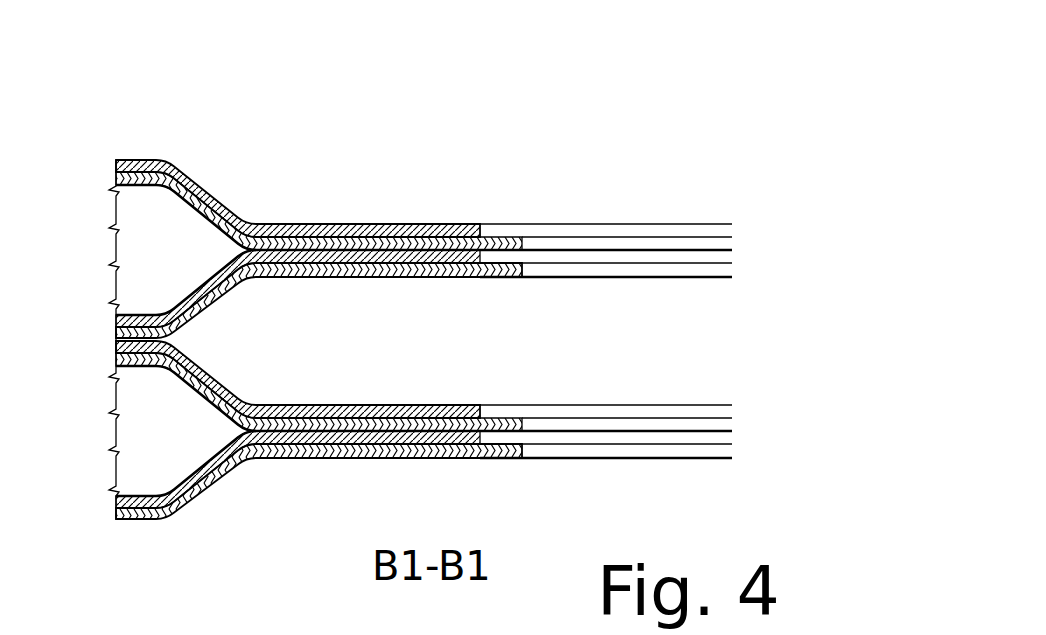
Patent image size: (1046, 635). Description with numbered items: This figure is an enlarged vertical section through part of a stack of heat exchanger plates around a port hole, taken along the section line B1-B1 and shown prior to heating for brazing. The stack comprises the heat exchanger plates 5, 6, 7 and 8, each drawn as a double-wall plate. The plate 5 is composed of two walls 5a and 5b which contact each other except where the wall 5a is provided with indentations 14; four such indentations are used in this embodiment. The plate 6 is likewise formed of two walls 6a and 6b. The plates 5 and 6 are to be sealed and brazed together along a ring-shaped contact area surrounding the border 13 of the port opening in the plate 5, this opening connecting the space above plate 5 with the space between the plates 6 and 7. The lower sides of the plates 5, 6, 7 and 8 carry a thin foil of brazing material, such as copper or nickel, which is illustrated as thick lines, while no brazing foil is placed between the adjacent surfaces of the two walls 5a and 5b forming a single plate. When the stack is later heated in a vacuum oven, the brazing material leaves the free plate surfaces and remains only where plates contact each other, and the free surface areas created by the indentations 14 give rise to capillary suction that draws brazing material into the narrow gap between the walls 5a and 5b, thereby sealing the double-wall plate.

The heat exchanger plate 5 is at (424, 128).
The wall of plate 5 5a is at (298, 142).
The wall of plate 5 5b is at (358, 150).
The heat exchanger plate 6 is at (218, 305).
The wall of plate 6 6a is at (298, 306).
The wall of plate 6 6b is at (358, 313).
The heat exchanger plate 7 is at (424, 398).
The heat exchanger plate 8 is at (319, 476).
The border of the port opening 13 is at (640, 340).
The indentations 14 is at (606, 254).